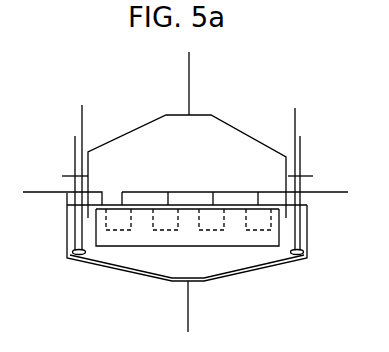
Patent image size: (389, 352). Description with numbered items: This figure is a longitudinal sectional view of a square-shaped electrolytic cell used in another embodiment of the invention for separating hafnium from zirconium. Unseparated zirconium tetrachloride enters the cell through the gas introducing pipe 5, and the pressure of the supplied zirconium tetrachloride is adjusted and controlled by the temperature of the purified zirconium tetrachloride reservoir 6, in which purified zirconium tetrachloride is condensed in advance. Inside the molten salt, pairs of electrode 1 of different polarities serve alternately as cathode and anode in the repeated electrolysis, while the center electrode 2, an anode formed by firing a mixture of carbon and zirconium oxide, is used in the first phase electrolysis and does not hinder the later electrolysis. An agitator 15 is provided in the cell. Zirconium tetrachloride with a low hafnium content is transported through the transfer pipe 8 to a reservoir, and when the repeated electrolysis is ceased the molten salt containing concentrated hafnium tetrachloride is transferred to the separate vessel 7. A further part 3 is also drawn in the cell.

The electrode 1 is at (52, 193).
The center electrode 2 is at (323, 193).
The pipe connector 3 is at (304, 249).
The gas introducing pipe 5 is at (70, 188).
The purified zirconium tetrachloride reservoir 6 is at (75, 136).
The separate vessel 7 is at (188, 332).
The transfer pipe 8 is at (189, 53).
The agitator 15 is at (84, 256).